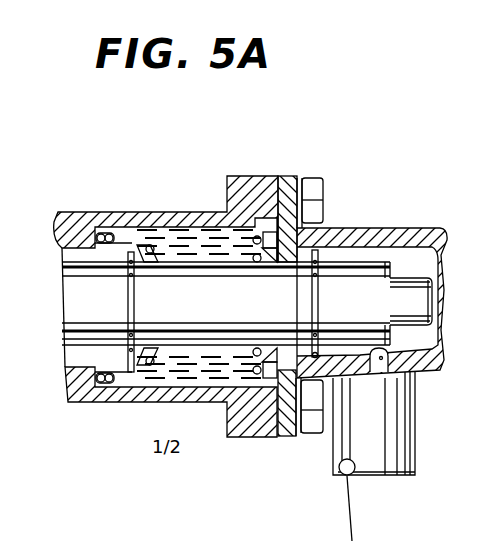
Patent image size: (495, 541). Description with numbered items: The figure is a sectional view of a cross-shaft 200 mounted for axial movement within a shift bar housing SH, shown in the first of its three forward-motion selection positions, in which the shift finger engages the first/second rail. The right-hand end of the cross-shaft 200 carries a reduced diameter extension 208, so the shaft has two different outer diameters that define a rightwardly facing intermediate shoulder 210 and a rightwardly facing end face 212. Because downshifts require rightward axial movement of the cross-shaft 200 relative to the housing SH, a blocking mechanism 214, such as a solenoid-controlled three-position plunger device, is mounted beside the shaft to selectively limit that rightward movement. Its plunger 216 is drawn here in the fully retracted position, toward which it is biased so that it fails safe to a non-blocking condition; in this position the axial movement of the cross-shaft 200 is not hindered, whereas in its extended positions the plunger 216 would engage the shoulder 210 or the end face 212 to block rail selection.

The shift bar housing SH is at (259, 178).
The cross-shaft 200 is at (226, 303).
The reduced diameter extension 208 is at (417, 280).
The shoulder 210 is at (394, 268).
The end face 212 is at (435, 310).
The blocking mechanism 214 is at (413, 448).
The plunger 216 is at (418, 368).